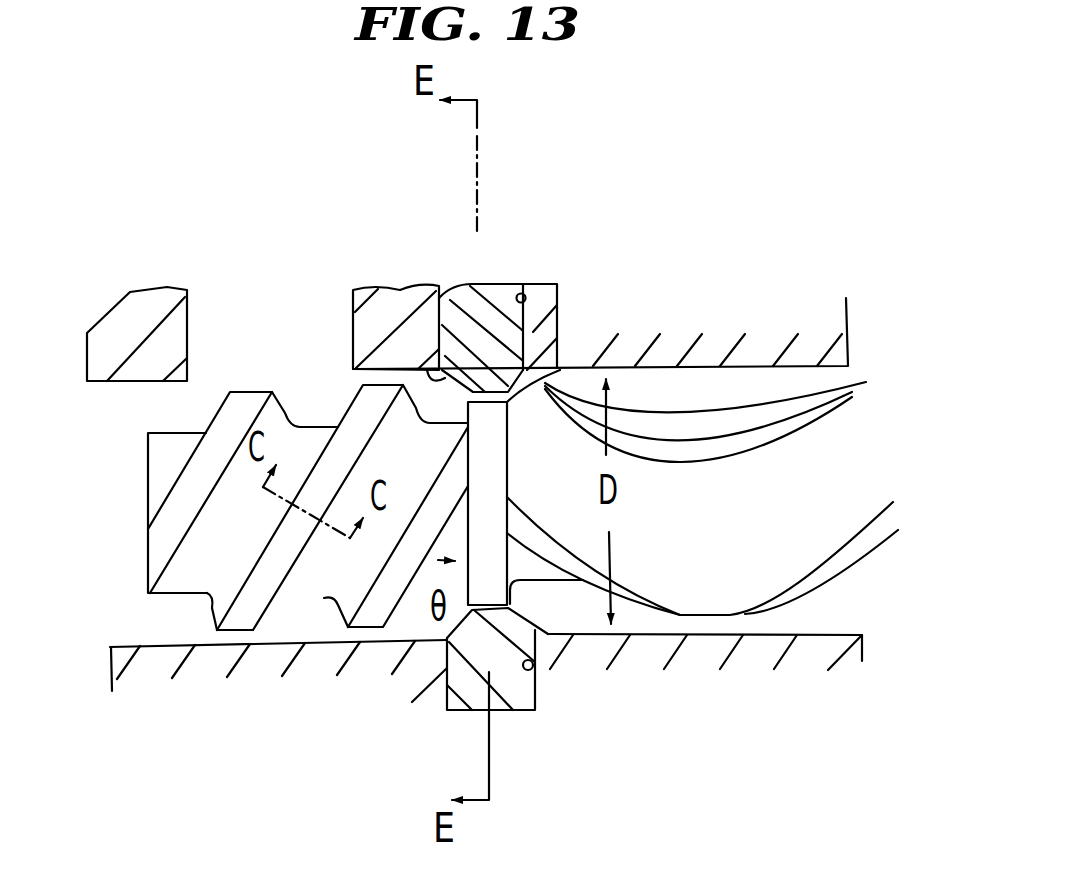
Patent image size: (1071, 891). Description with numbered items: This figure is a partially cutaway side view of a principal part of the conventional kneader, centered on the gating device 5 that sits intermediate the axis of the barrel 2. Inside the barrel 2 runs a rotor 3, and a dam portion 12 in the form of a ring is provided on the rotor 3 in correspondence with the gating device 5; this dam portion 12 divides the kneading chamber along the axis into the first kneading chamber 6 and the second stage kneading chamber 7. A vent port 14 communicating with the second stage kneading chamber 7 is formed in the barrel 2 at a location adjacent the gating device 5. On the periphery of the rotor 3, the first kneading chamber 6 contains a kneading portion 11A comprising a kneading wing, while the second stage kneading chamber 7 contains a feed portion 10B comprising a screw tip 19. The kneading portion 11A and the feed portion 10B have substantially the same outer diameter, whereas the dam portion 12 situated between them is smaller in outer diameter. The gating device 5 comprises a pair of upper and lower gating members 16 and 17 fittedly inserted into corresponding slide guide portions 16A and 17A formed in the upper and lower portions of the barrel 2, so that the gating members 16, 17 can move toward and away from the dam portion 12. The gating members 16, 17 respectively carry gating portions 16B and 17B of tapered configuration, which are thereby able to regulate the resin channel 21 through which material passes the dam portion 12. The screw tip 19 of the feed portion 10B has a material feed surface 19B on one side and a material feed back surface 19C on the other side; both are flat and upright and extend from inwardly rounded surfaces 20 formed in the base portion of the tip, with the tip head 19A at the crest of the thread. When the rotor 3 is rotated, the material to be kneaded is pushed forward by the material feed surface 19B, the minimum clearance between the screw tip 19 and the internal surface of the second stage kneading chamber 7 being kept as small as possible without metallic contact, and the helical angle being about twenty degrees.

The barrel 2 is at (665, 354).
The rotor 3 is at (792, 400).
The gating device 5 is at (456, 280).
The first kneading chamber 6 is at (790, 612).
The second stage kneading chamber 7 is at (297, 612).
The feed portion 10B is at (326, 418).
The kneading portion 11A is at (663, 483).
The dam portion 12 is at (495, 432).
The vent port 14 is at (222, 360).
The upper gating member 16 is at (483, 313).
The slide guide portion 16A is at (542, 282).
The gating portion 16B is at (415, 285).
The lower gating member 17 is at (515, 675).
The slide guide portion 17A is at (533, 670).
The gating portion 17B is at (459, 624).
The screw tip 19 is at (215, 413).
The tooth head 19A is at (182, 492).
The material feed surface 19B is at (213, 603).
The material feed back surface 19C is at (275, 600).
The inwardly rounded surface 20 is at (203, 602).
The resin channel 21 is at (514, 610).